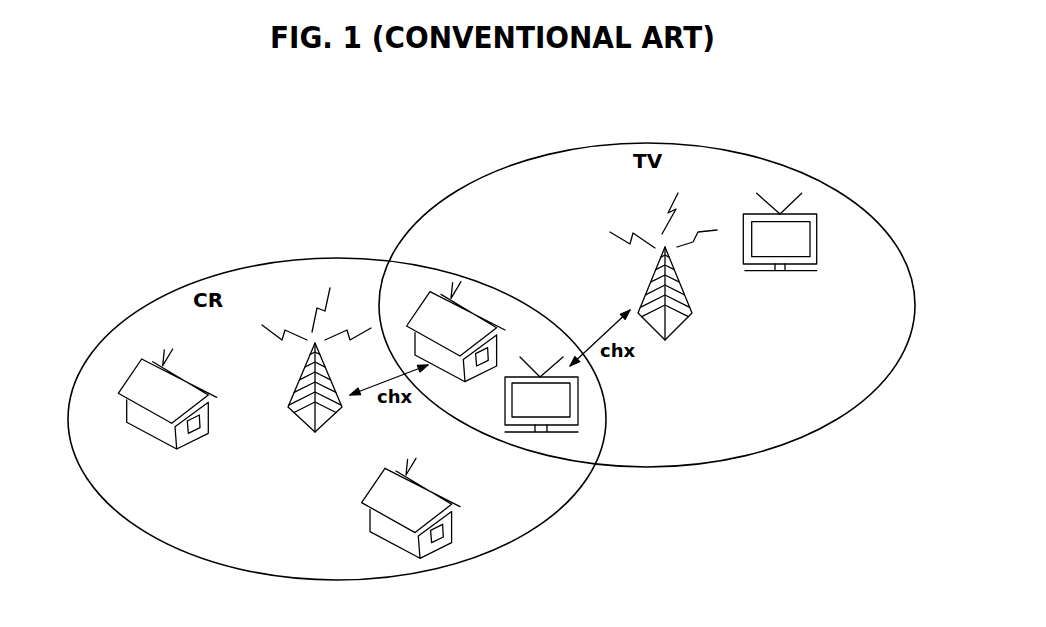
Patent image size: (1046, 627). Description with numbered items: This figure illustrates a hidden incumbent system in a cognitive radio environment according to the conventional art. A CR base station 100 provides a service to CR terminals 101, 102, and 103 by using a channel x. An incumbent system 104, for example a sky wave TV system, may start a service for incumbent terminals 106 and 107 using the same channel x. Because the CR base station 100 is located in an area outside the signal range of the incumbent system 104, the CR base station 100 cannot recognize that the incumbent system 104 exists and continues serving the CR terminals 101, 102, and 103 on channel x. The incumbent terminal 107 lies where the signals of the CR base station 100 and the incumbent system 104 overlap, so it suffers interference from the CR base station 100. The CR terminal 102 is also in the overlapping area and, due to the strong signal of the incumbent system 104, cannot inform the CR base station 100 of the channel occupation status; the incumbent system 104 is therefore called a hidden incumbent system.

The CR base station 100 is at (300, 420).
The CR terminal 101 is at (373, 497).
The CR terminal 102 is at (483, 305).
The CR terminal 103 is at (193, 442).
The incumbent system 104 is at (680, 318).
The incumbent terminal 106 is at (817, 240).
The incumbent terminal 107 is at (578, 400).